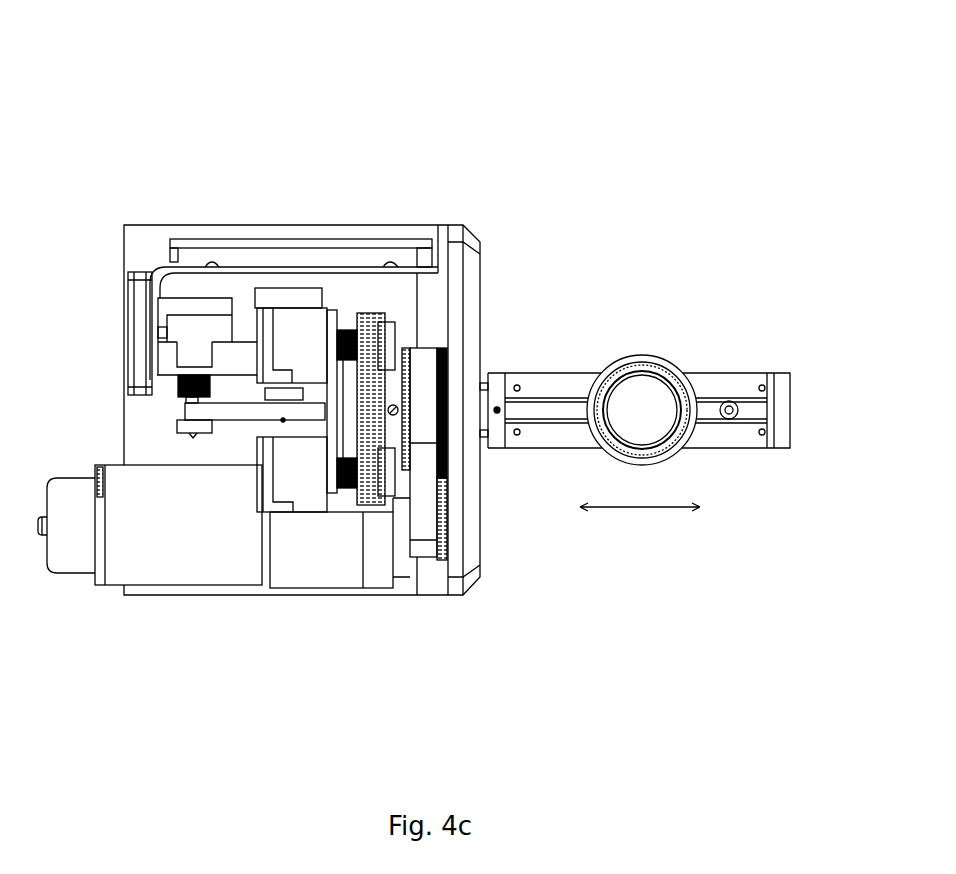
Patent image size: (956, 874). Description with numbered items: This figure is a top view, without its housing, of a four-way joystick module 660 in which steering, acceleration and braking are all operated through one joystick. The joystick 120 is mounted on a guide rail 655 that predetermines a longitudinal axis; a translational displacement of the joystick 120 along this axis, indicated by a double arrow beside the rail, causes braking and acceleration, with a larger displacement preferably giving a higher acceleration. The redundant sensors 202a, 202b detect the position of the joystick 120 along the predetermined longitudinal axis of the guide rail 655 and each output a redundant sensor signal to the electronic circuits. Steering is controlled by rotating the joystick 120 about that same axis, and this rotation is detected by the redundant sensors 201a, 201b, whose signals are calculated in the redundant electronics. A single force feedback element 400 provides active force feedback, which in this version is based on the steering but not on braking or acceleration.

The four-way joystick module 660 is at (465, 74).
The redundant sensor 202a is at (192, 337).
The redundant sensor 202b is at (284, 297).
The redundant sensor 201a is at (302, 343).
The redundant sensor 201b is at (302, 478).
The force feedback element 400 is at (165, 520).
The joystick 120 is at (653, 390).
The guide rail 655 is at (737, 415).